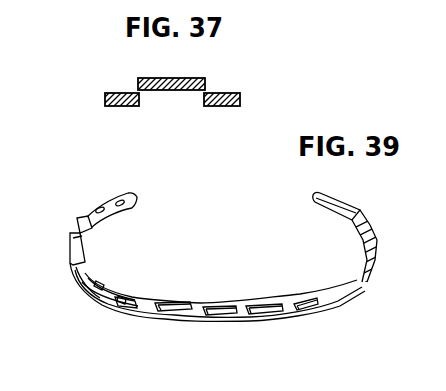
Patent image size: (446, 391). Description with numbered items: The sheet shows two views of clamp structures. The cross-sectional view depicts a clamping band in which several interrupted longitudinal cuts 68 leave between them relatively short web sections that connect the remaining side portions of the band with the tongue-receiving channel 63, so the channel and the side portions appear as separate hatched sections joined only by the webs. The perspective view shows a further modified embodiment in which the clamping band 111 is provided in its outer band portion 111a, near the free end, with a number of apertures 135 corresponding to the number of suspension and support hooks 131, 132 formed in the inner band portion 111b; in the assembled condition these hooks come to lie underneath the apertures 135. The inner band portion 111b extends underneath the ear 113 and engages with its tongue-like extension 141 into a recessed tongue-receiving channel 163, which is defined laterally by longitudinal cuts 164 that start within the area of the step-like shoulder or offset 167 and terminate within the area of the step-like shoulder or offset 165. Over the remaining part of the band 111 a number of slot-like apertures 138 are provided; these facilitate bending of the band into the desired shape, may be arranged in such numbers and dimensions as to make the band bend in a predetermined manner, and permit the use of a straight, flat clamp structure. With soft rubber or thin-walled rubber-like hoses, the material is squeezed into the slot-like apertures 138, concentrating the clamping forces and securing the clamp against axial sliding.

In FIG. 37, the tongue-receiving channel 63 is at (176, 91).
In FIG. 37, the interrupted longitudinal cuts 68 is at (166, 104).
In FIG. 39, the clamping band 111 is at (200, 299).
In FIG. 39, the outer band portion 111a is at (237, 320).
In FIG. 39, the inner band portion 111b is at (367, 215).
In FIG. 39, the ear 113 is at (78, 211).
In FIG. 39, the suspension hook 131 is at (355, 295).
In FIG. 39, the support hook 132 is at (372, 272).
In FIG. 39, the apertures 135 is at (121, 202).
In FIG. 39, the slot-like apertures 138 is at (297, 303).
In FIG. 39, the tongue-like extension 141 is at (340, 202).
In FIG. 39, the tongue-receiving channel 163 is at (107, 288).
In FIG. 39, the longitudinal cuts 164 is at (117, 295).
In FIG. 39, the step-like shoulder or offset 165 is at (138, 312).
In FIG. 39, the step-like shoulder or offset 167 is at (83, 290).